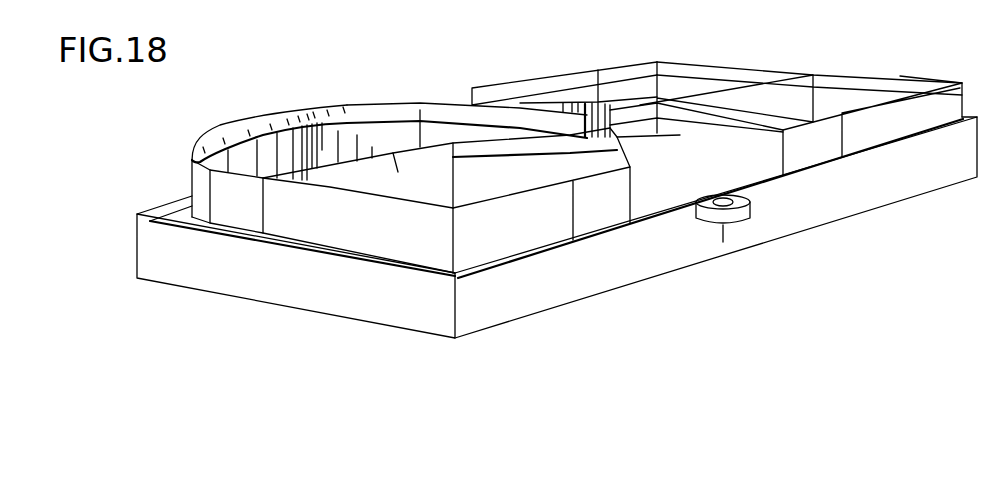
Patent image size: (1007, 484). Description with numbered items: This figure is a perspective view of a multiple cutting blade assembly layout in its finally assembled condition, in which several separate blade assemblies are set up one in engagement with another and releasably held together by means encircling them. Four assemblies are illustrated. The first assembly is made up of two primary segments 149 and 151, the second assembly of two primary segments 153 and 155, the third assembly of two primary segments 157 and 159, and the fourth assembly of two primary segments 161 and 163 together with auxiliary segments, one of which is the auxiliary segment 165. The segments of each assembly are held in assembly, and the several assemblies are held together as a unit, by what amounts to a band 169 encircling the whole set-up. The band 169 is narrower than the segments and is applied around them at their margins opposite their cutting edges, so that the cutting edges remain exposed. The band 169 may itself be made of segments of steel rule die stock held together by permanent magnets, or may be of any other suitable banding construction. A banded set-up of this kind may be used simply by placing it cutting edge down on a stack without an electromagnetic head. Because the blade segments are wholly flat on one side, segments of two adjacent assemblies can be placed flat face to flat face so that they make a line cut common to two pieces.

The primary segment 149 is at (407, 250).
The primary segment 151 is at (592, 218).
The primary segment 153 is at (916, 78).
The primary segment 155 is at (814, 150).
The primary segment 157 is at (776, 68).
The primary segment 159 is at (506, 86).
The primary segment 161 is at (433, 103).
The primary segment 163 is at (242, 222).
The auxiliary segment 165 is at (305, 107).
The band 169 is at (505, 310).